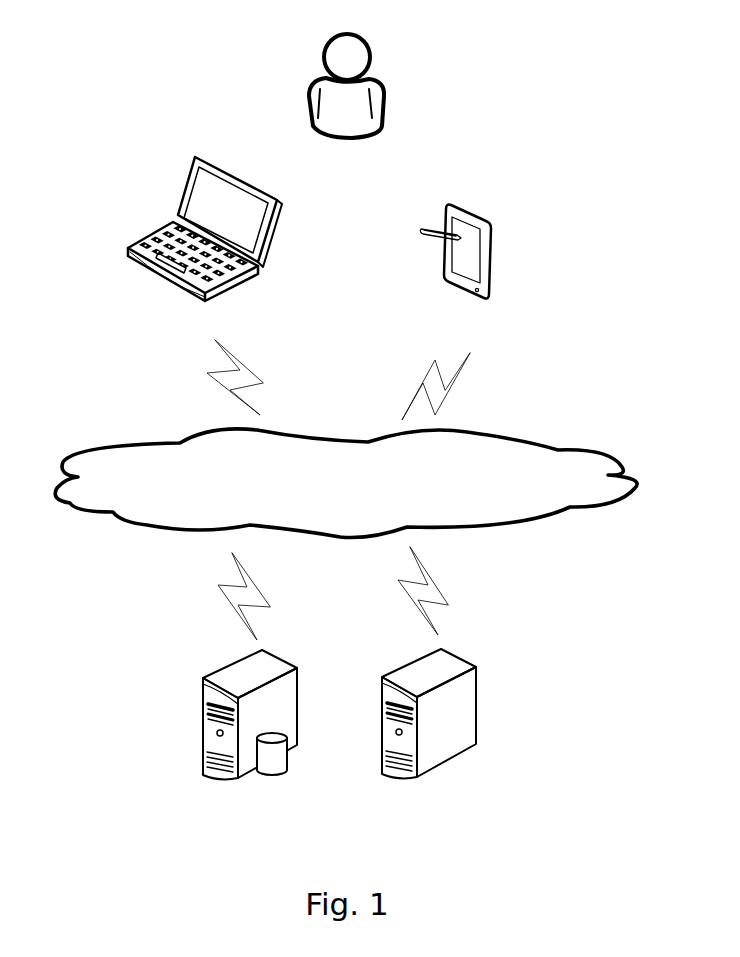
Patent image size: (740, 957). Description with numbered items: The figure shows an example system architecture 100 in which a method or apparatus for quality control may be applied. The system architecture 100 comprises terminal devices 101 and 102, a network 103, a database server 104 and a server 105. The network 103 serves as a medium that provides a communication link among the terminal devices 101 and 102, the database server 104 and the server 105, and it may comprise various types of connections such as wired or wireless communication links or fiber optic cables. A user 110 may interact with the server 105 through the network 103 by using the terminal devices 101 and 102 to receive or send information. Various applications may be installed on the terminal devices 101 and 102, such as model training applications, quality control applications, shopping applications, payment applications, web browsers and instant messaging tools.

The system architecture 100 is at (607, 36).
The user 110 is at (346, 103).
The terminal device 101 is at (205, 246).
The terminal device 102 is at (455, 270).
The network 103 is at (346, 483).
The database server 104 is at (250, 737).
The server 105 is at (429, 737).